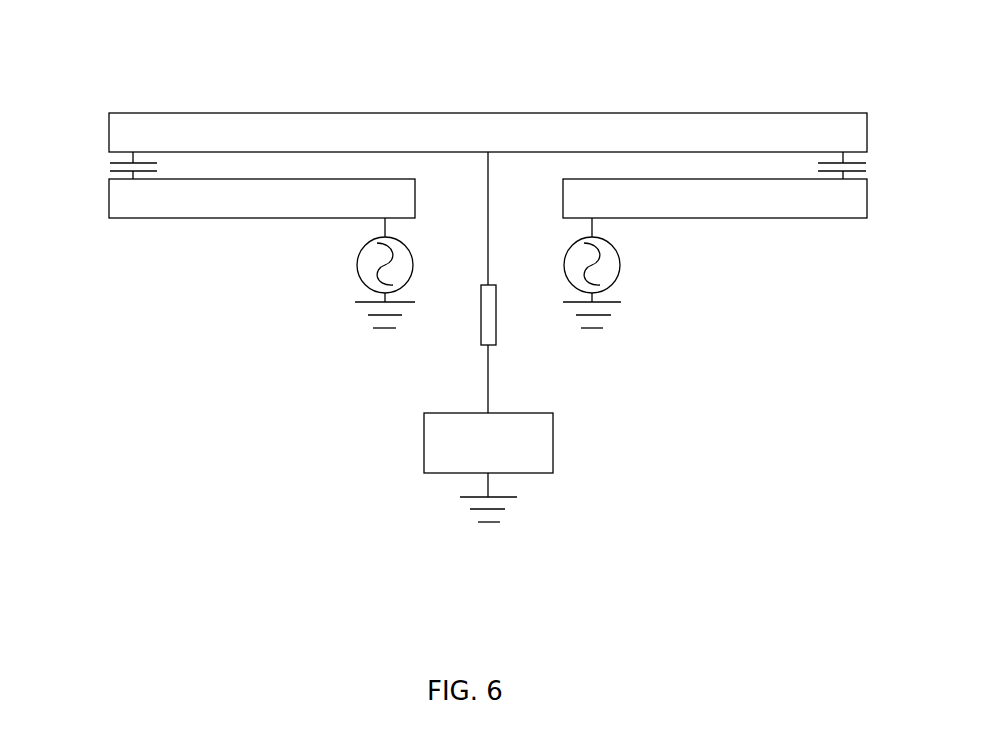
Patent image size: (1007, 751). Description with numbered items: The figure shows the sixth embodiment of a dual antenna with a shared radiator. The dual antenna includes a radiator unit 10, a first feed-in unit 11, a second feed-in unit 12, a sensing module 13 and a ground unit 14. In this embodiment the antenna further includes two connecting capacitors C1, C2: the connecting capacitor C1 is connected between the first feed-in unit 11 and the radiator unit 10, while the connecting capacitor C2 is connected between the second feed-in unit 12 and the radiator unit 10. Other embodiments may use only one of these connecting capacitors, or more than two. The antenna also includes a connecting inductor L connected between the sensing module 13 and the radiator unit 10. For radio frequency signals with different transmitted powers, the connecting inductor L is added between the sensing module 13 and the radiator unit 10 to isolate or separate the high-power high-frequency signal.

The radiator unit 10 is at (367, 127).
The first feed-in unit 11 is at (202, 212).
The second feed-in unit 12 is at (792, 208).
The sensing module 13 is at (537, 465).
The ground unit 14 is at (488, 515).
The connecting capacitor C1 is at (110, 167).
The connecting capacitor C2 is at (857, 167).
The connecting inductor L is at (488, 330).